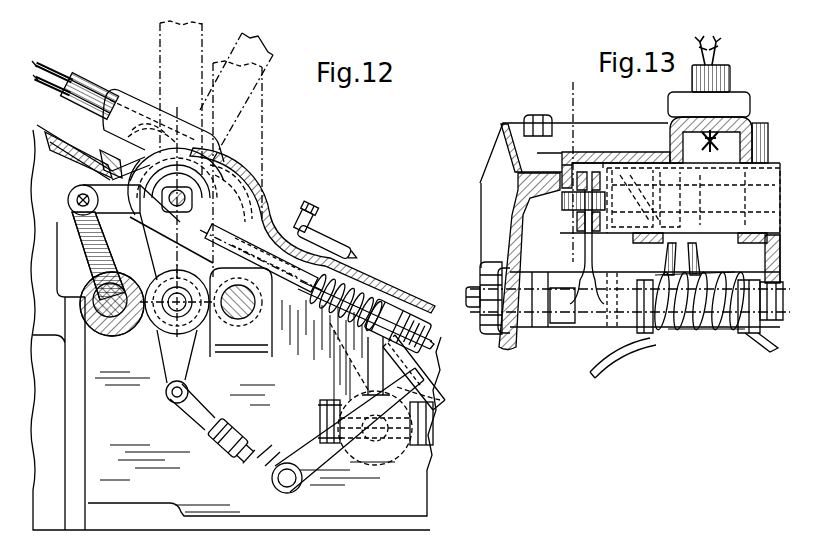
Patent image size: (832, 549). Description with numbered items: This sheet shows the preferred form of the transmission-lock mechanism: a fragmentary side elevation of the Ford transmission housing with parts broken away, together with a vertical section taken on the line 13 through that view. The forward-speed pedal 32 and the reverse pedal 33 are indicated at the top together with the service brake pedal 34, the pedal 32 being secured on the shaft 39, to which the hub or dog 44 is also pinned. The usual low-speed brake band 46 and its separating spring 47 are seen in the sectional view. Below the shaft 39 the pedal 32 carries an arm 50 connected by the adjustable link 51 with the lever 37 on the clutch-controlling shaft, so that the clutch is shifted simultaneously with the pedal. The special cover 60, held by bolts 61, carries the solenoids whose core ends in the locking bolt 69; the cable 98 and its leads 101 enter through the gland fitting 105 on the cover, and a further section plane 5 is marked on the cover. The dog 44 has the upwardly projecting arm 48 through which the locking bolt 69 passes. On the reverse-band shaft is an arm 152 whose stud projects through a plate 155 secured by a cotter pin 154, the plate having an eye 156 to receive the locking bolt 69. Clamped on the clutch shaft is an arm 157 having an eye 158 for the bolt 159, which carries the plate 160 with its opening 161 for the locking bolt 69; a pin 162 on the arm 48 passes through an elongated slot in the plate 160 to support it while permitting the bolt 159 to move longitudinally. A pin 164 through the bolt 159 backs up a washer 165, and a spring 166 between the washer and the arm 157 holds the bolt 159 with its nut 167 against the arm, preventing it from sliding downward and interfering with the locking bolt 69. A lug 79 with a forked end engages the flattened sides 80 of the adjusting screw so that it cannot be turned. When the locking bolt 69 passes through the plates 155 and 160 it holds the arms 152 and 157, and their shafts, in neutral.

In FIG. 12, the pedal 32 is at (172, 38).
In FIG. 12, the section line 13 is at (177, 107).
In FIG. 12, the pedal 33 is at (250, 55).
In FIG. 12, the cable gland 98 is at (73, 78).
In FIG. 13, the cable gland 98 is at (707, 51).
In FIG. 12, the cable 101 is at (60, 90).
In FIG. 13, the cable 101 is at (705, 43).
In FIG. 12, the actuator body 105 is at (143, 97).
In FIG. 12, the eye 156 is at (210, 118).
In FIG. 12, the locking bolt 69 is at (165, 186).
In FIG. 13, the locking bolt 69 is at (515, 212).
In FIG. 12, the third pedal 34 is at (263, 170).
In FIG. 12, the cotter pin 154 is at (90, 181).
In FIG. 12, the pin 164 is at (343, 253).
In FIG. 12, the washer 165 is at (327, 267).
In FIG. 12, the pin 162 is at (152, 242).
In FIG. 12, the plate 155 is at (177, 318).
In FIG. 13, the plate 155 is at (573, 230).
In FIG. 12, the arm 152 is at (78, 274).
In FIG. 13, the arm 152 is at (697, 251).
In FIG. 12, the eye 158 is at (393, 307).
In FIG. 12, the spring 166 is at (350, 310).
In FIG. 12, the arm 50 is at (236, 327).
In FIG. 12, the adjustable link 51 is at (203, 418).
In FIG. 12, the arm 157 is at (367, 384).
In FIG. 12, the lever 37 is at (345, 430).
In FIG. 12, the bolt 159 is at (440, 361).
In FIG. 12, the nut 167 is at (440, 384).
In FIG. 13, the section line indicator 5 is at (593, 82).
In FIG. 13, the bolts 61 is at (538, 114).
In FIG. 13, the cover 60 is at (518, 136).
In FIG. 13, the plate 160 is at (595, 172).
In FIG. 13, the opening 161 is at (615, 150).
In FIG. 13, the arm 48 is at (592, 254).
In FIG. 13, the lug 79 is at (773, 259).
In FIG. 13, the flattened sides 80 is at (764, 304).
In FIG. 13, the dog 44 is at (590, 307).
In FIG. 13, the brake band 46 is at (651, 341).
In FIG. 13, the spring 47 is at (720, 331).
In FIG. 13, the shaft 39 is at (733, 341).